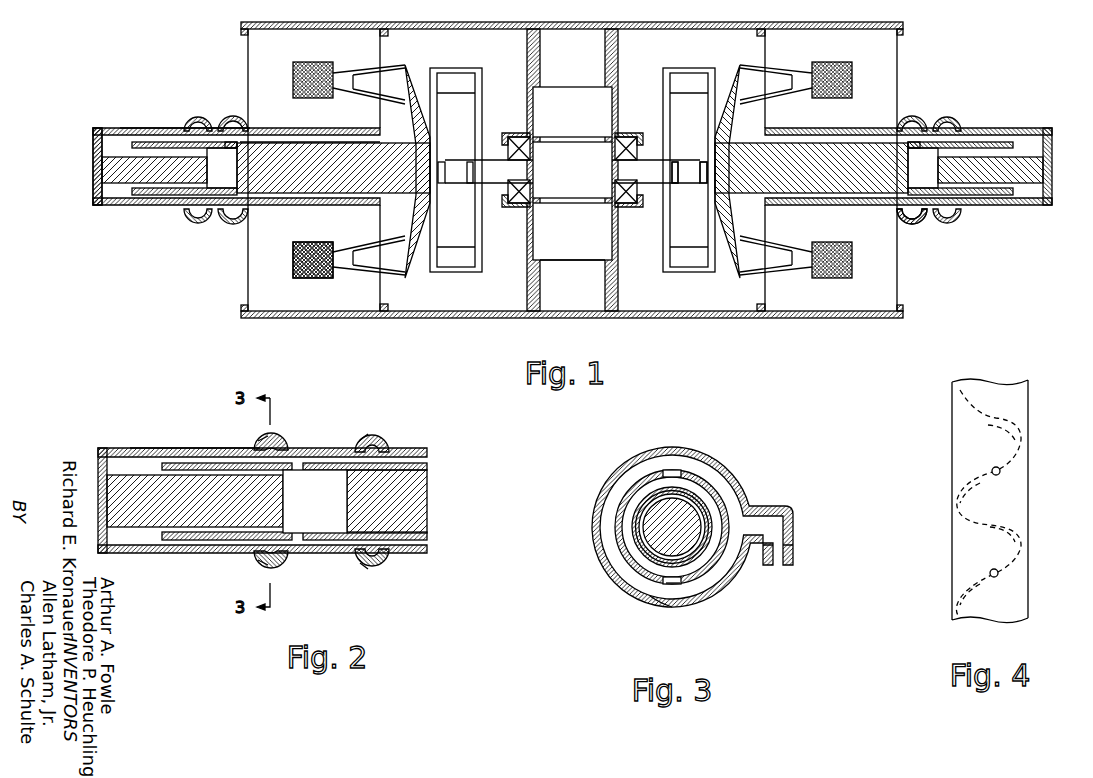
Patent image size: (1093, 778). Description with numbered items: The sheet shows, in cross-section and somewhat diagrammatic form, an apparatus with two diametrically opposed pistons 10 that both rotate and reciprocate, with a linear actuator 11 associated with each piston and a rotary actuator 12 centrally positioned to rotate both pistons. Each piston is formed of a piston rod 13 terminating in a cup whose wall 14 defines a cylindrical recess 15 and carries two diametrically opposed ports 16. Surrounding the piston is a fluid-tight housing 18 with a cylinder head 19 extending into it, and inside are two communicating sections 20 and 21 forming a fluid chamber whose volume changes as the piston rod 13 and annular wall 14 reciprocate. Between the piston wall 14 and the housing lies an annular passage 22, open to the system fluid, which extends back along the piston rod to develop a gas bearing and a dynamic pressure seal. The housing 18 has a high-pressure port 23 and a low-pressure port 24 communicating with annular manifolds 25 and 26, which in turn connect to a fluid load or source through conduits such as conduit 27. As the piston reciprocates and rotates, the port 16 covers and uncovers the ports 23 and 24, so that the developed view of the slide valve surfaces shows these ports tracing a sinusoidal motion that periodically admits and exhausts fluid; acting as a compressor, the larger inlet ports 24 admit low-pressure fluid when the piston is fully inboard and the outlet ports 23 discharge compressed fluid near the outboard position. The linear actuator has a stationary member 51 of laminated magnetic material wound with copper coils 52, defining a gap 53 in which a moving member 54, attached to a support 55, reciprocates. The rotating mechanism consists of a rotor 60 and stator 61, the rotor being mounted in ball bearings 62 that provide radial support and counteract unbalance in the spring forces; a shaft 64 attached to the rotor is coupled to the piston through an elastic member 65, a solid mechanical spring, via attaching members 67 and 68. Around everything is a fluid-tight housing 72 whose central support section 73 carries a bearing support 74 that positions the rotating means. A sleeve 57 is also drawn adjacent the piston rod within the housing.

In FIG. 1, the piston 10 is at (176, 121).
In FIG. 1, the linear actuator 11 is at (388, 280).
In FIG. 1, the rotary actuator 12 is at (587, 264).
In FIG. 1, the piston rod 13 is at (325, 192).
In FIG. 1, the piston wall 14 is at (155, 194).
In FIG. 2, the piston wall 14 is at (215, 540).
In FIG. 3, the piston wall 14 is at (632, 533).
In FIG. 1, the cylindrical recess 15 is at (145, 142).
In FIG. 2, the cylindrical recess 15 is at (178, 469).
In FIG. 3, the cylindrical recess 15 is at (643, 551).
In FIG. 1, the port 16 is at (218, 140).
In FIG. 2, the port 16 is at (305, 464).
In FIG. 4, the port 16 is at (992, 469).
In FIG. 1, the housing 18 is at (119, 128).
In FIG. 2, the housing 18 is at (131, 448).
In FIG. 3, the housing 18 is at (616, 520).
In FIG. 1, the cylinder head 19 is at (100, 170).
In FIG. 2, the cylinder head 19 is at (187, 509).
In FIG. 3, the cylinder head 19 is at (683, 538).
In FIG. 1, the communicating section 20 is at (218, 185).
In FIG. 2, the communicating section 20 is at (314, 511).
In FIG. 1, the communicating section 21 is at (115, 205).
In FIG. 2, the communicating section 21 is at (149, 536).
In FIG. 1, the annular passage 22 is at (157, 132).
In FIG. 2, the annular passage 22 is at (197, 457).
In FIG. 3, the annular passage 22 is at (645, 568).
In FIG. 1, the high-pressure port 23 is at (193, 216).
In FIG. 2, the high-pressure port 23 is at (282, 452).
In FIG. 3, the high-pressure port 23 is at (673, 585).
In FIG. 4, the high-pressure port 23 is at (956, 490).
In FIG. 2, the low-pressure port 24 is at (390, 437).
In FIG. 4, the low-pressure port 24 is at (1022, 421).
In FIG. 1, the annular manifold 25 is at (958, 212).
In FIG. 2, the annular manifold 25 is at (272, 436).
In FIG. 3, the annular manifold 25 is at (656, 596).
In FIG. 1, the annular manifold 26 is at (238, 216).
In FIG. 2, the annular manifold 26 is at (377, 446).
In FIG. 3, the conduit 27 is at (767, 530).
In FIG. 1, the stationary member 51 is at (259, 56).
In FIG. 1, the coil 52 is at (317, 279).
In FIG. 1, the gap 53 is at (346, 263).
In FIG. 1, the moving member 54 is at (370, 269).
In FIG. 1, the support 55 is at (412, 230).
In FIG. 1, the sleeve 57 is at (310, 143).
In FIG. 1, the rotor 60 is at (562, 177).
In FIG. 1, the stator 61 is at (563, 118).
In FIG. 1, the ball bearing 62 is at (510, 193).
In FIG. 1, the shaft 64 is at (490, 166).
In FIG. 1, the elastic member 65 is at (460, 267).
In FIG. 1, the attaching member 67 is at (676, 166).
In FIG. 1, the attaching member 68 is at (702, 176).
In FIG. 1, the fluid-tight housing 72 is at (632, 311).
In FIG. 1, the central support section 73 is at (527, 286).
In FIG. 1, the bearing support 74 is at (506, 133).